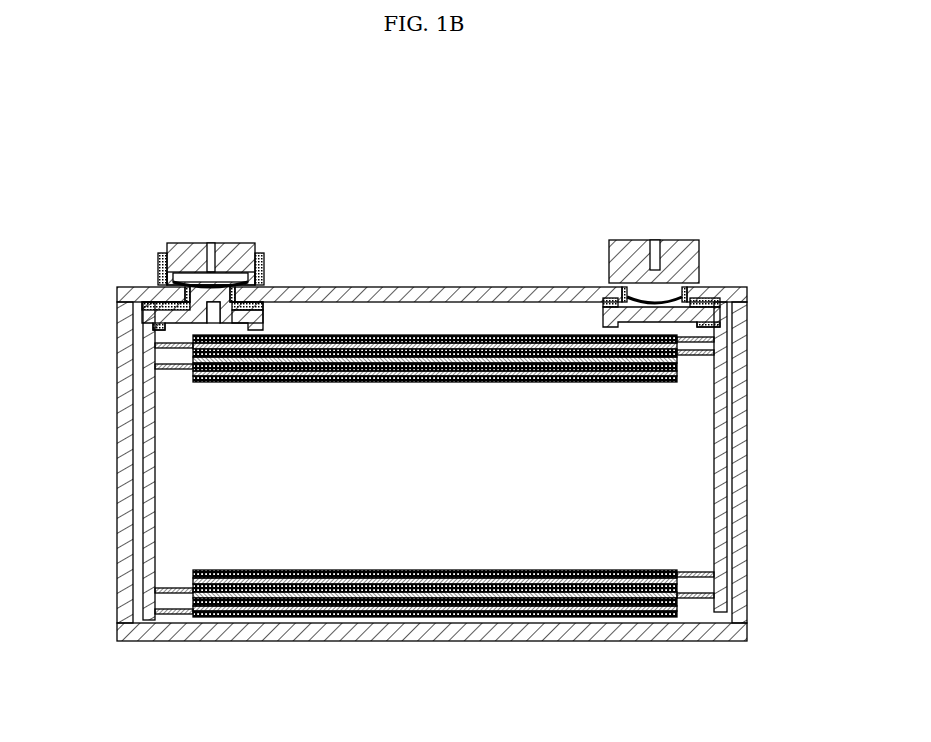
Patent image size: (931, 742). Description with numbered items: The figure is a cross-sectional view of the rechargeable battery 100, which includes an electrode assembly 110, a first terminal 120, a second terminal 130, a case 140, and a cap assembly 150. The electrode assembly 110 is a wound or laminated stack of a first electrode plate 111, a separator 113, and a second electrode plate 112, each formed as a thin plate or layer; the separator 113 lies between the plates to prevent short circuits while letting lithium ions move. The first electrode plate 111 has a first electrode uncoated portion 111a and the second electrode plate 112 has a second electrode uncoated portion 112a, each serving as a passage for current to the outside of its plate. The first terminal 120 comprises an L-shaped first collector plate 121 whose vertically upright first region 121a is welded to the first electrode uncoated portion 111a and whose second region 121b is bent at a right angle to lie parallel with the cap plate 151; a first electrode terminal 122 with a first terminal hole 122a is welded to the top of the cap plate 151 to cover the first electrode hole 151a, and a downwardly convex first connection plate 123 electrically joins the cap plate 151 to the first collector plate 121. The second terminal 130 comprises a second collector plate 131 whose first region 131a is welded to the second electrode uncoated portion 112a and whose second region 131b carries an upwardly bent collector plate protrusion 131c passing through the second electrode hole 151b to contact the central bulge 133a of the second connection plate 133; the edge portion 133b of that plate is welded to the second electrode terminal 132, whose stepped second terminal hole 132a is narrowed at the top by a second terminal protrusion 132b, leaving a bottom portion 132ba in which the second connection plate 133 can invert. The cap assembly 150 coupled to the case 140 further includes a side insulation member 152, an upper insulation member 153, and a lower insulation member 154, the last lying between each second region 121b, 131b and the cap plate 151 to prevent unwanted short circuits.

The rechargeable battery 100 is at (773, 146).
The electrode assembly 110 is at (383, 515).
The first electrode plate 111 is at (587, 603).
The first electrode uncoated portion 111a is at (702, 600).
The second electrode plate 112 is at (317, 612).
The second electrode uncoated portion 112a is at (173, 613).
The separator 113 is at (452, 585).
The first terminal 120 is at (707, 261).
The first collector plate 121 is at (743, 466).
The first region 121a is at (727, 530).
The second region 121b is at (702, 327).
The first electrode terminal 122 is at (693, 246).
The first terminal hole 122a is at (655, 258).
The first connection plate 123 is at (692, 288).
The second terminal 130 is at (427, 263).
The second collector plate 131 is at (133, 468).
The first region 131a is at (143, 537).
The second region 131b is at (215, 350).
The collector plate protrusion 131c is at (160, 328).
The second electrode terminal 132 is at (246, 242).
The second terminal hole 132a is at (211, 262).
The second terminal protrusion 132b is at (188, 266).
The bottom portion 132ba is at (216, 270).
The second connection plate 133 is at (252, 262).
The central bulge 133a is at (216, 322).
The edge portion 133b is at (250, 305).
The case 140 is at (750, 578).
The cap assembly 150 is at (397, 258).
The cap plate 151 is at (476, 286).
The first electrode hole 151a is at (630, 283).
The second electrode hole 151b is at (170, 262).
The side insulation member 152 is at (185, 296).
The upper insulation member 153 is at (158, 266).
The lower insulation member 154 is at (150, 306).